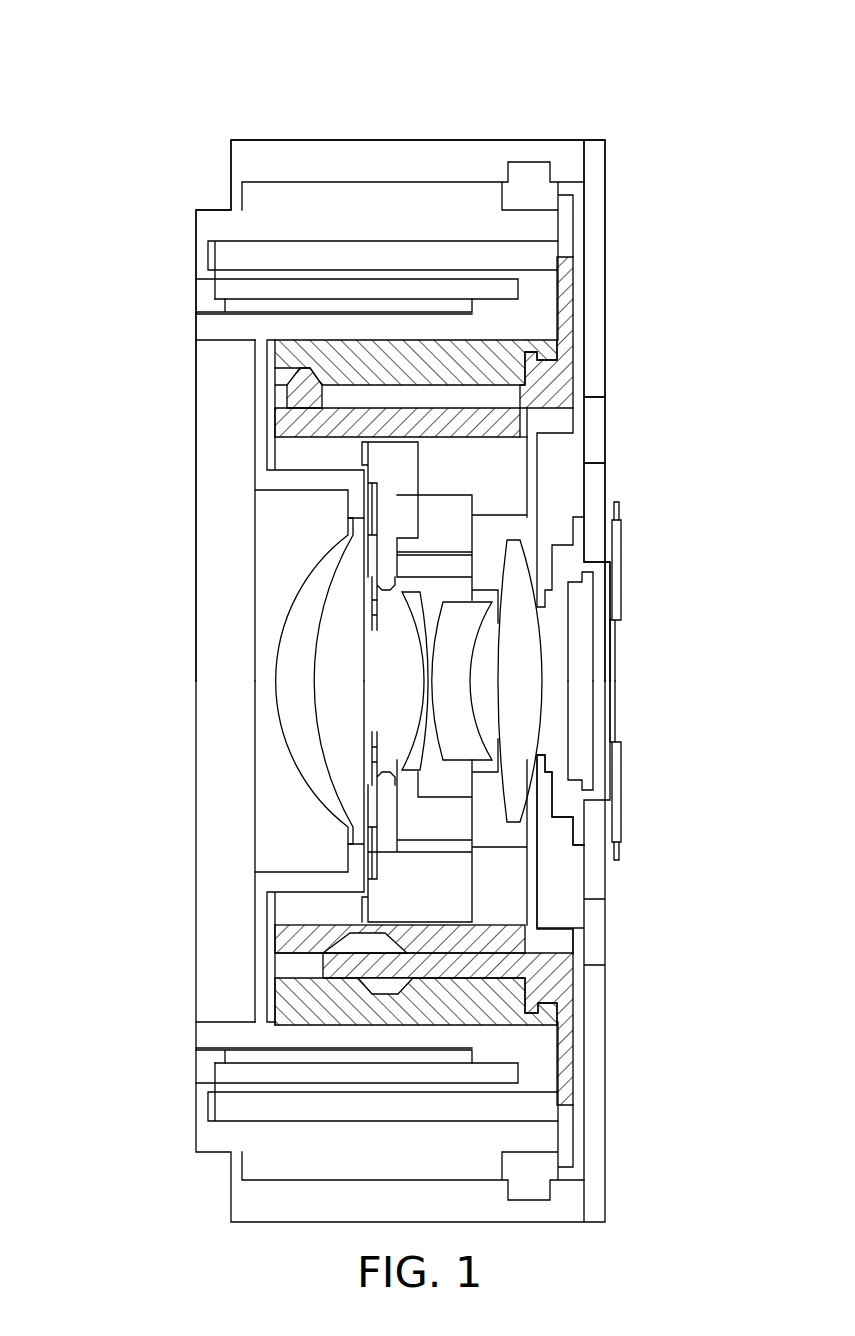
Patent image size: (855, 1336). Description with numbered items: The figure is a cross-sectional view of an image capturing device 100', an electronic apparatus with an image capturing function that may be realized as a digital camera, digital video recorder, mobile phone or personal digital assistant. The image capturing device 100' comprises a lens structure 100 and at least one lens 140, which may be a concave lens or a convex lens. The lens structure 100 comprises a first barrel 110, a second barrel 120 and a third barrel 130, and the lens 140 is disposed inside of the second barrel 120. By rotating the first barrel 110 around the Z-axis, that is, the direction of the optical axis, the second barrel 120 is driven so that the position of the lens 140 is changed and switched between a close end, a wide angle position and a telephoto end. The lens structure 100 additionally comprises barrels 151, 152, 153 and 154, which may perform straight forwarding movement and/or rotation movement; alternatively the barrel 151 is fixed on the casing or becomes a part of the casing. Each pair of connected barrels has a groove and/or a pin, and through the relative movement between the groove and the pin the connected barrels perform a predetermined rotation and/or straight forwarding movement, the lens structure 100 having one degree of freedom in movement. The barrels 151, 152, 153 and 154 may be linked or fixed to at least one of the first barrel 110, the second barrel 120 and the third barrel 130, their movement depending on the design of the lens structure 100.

The image capturing device 100' is at (324, 632).
The lens structure 100 is at (516, 347).
The first barrel 110 is at (497, 353).
The second barrel 120 is at (479, 420).
The third barrel 130 is at (575, 378).
The lens 140 is at (407, 653).
The barrel 151 is at (425, 167).
The barrel 152 is at (310, 230).
The barrel 153 is at (210, 296).
The barrel 154 is at (210, 325).